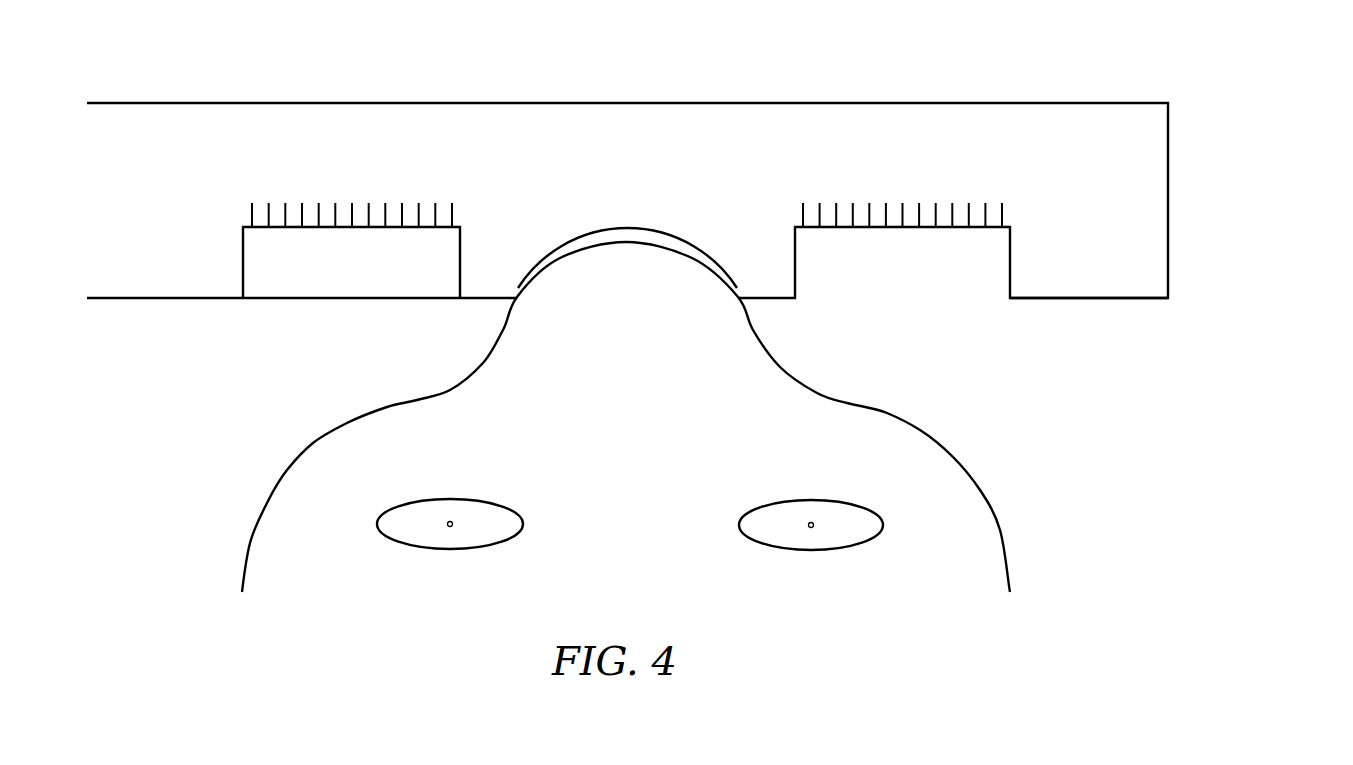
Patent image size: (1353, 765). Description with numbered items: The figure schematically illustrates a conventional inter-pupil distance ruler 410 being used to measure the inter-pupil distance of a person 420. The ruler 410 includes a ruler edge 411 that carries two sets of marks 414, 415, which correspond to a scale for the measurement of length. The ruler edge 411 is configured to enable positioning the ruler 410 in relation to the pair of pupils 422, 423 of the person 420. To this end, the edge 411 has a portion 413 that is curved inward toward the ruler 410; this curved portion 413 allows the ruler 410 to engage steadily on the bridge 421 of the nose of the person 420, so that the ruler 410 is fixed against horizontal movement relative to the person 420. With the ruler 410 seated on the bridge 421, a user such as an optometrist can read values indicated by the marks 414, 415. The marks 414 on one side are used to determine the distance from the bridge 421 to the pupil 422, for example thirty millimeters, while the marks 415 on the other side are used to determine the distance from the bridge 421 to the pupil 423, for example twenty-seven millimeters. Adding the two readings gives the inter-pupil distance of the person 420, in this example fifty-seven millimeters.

The inter-pupil distance ruler 410 is at (1200, 172).
The ruler edge 411 is at (1088, 300).
The curved portion 413 is at (636, 225).
The marks 414 is at (970, 205).
The marks 415 is at (403, 205).
The person 420 is at (701, 417).
The bridge of a nose 421 is at (628, 287).
The pupil 422 is at (452, 520).
The pupil 423 is at (813, 521).